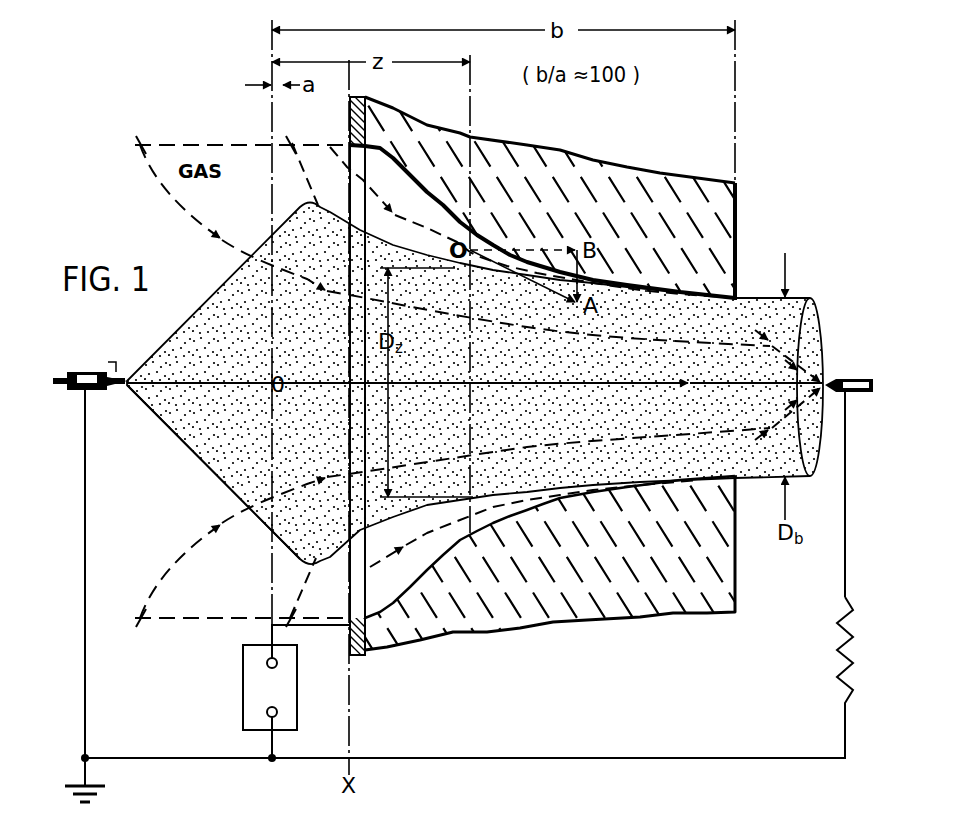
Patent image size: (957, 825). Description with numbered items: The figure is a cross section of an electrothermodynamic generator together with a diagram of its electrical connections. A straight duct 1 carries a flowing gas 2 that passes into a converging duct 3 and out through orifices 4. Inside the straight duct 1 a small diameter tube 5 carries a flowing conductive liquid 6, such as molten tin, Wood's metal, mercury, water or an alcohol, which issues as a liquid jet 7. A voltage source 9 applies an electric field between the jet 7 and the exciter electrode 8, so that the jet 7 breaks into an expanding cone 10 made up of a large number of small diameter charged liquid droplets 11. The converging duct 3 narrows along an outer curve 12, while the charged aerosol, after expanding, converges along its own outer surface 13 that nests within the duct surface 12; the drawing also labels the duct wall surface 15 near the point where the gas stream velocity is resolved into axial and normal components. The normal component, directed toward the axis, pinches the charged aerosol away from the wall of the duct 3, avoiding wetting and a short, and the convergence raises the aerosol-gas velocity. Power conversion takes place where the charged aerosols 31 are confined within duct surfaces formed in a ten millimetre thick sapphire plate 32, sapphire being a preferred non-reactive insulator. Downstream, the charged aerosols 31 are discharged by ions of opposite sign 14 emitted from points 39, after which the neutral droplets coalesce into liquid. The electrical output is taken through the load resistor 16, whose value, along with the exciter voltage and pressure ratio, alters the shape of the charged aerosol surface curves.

The straight duct 1 is at (259, 171).
The flowing gas 2 is at (209, 228).
The converging duct 3 is at (418, 198).
The orifices 4 is at (747, 288).
The small diameter tube 5 is at (96, 391).
The conductive liquid 6 is at (65, 393).
The liquid jet 7 is at (120, 392).
The exciter electrode 8 is at (365, 652).
The voltage source 9 is at (298, 678).
The expanding cone 10 is at (216, 473).
The charged liquid droplets 11 is at (200, 440).
The outer curve 12 is at (522, 514).
The outer surface 13 is at (586, 490).
The ions of opposite sign 14 is at (790, 357).
The electrode surface 15 is at (470, 249).
The load resistor 16 is at (838, 645).
The charged aerosols 31 is at (646, 376).
The sapphire plate 32 is at (737, 195).
The points 39 is at (855, 395).